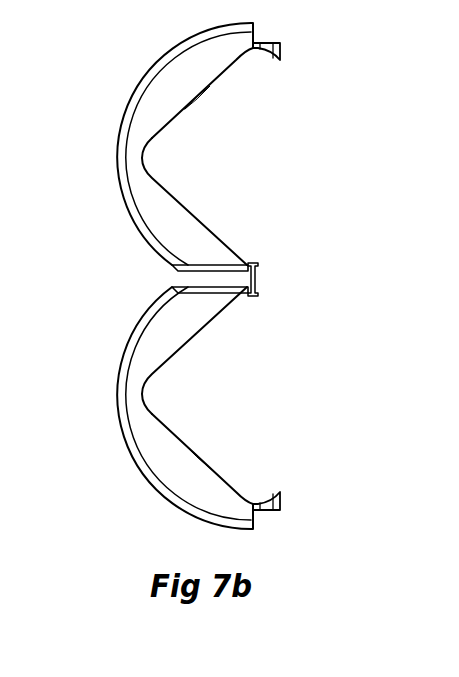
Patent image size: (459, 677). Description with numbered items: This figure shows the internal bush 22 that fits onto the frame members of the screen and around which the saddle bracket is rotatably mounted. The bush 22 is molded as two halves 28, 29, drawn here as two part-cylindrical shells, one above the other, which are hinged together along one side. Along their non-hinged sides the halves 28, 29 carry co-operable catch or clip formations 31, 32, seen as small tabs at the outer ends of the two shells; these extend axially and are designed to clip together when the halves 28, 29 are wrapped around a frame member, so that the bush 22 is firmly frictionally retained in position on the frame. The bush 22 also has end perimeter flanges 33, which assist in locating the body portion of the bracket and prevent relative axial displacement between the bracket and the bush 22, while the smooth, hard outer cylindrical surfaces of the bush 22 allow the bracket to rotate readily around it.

The bush 22 is at (101, 97).
The half of the bush 28 is at (117, 142).
The half of the bush 29 is at (123, 447).
The catch or clip formation 31 is at (280, 53).
The catch or clip formation 32 is at (282, 500).
The end perimeter flange 33 is at (257, 277).